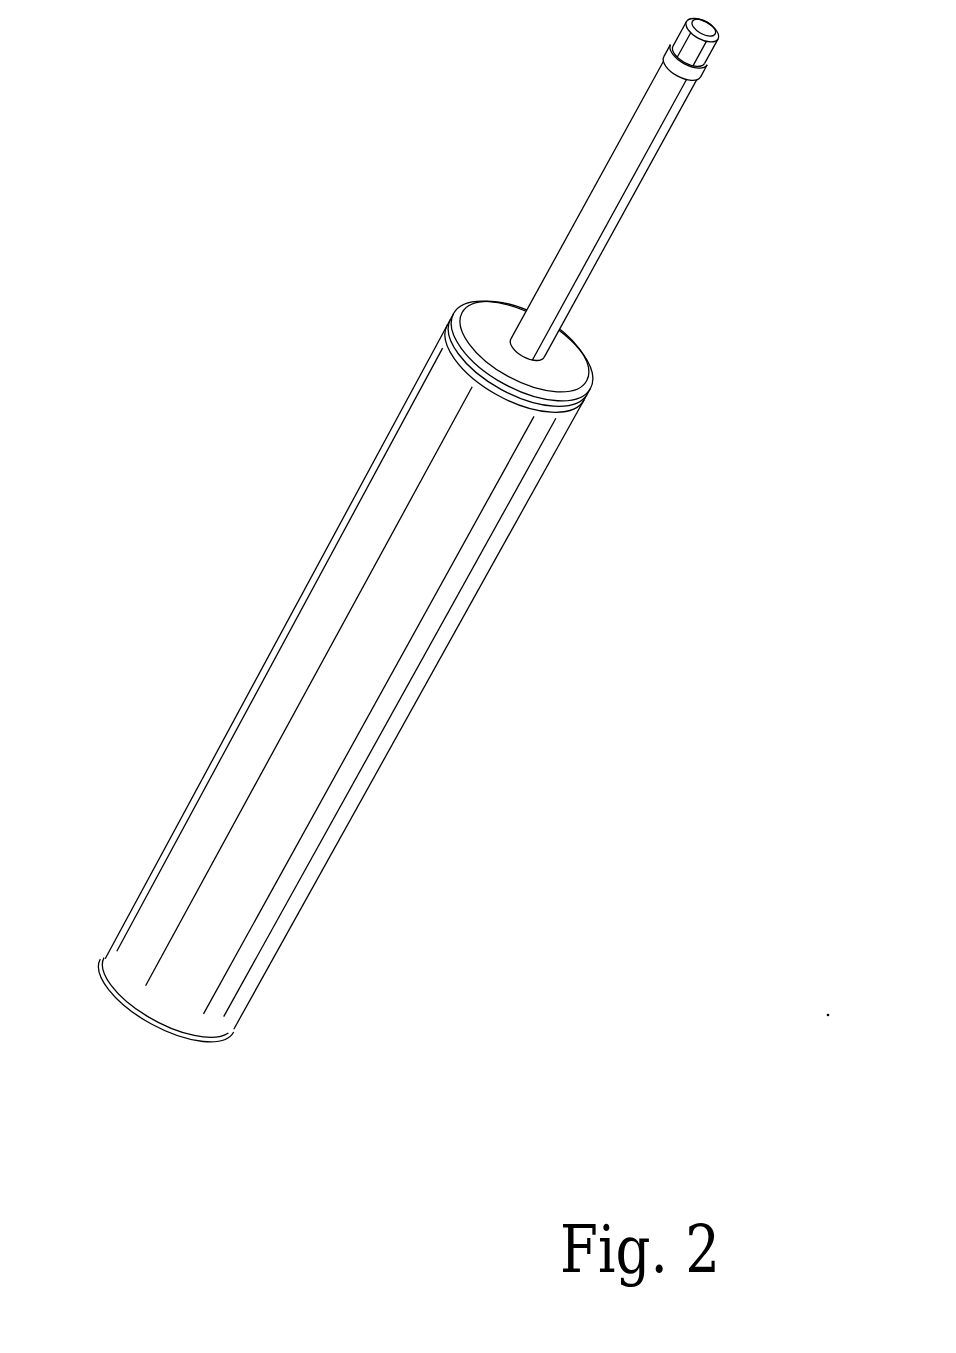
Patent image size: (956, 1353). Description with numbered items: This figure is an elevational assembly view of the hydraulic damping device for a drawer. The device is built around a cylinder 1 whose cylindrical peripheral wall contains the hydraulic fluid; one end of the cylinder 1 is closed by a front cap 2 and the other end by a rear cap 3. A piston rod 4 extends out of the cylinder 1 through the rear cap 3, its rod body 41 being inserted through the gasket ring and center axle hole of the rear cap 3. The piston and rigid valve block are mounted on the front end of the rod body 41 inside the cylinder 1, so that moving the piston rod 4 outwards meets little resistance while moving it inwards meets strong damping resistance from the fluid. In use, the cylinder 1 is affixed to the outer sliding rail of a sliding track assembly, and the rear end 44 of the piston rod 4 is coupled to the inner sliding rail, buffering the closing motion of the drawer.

The cylinder 1 is at (307, 523).
The front cap 2 is at (199, 1046).
The rear cap 3 is at (498, 316).
The piston rod 4 is at (588, 187).
The rod body 41 is at (615, 147).
The rear end 44 is at (670, 54).